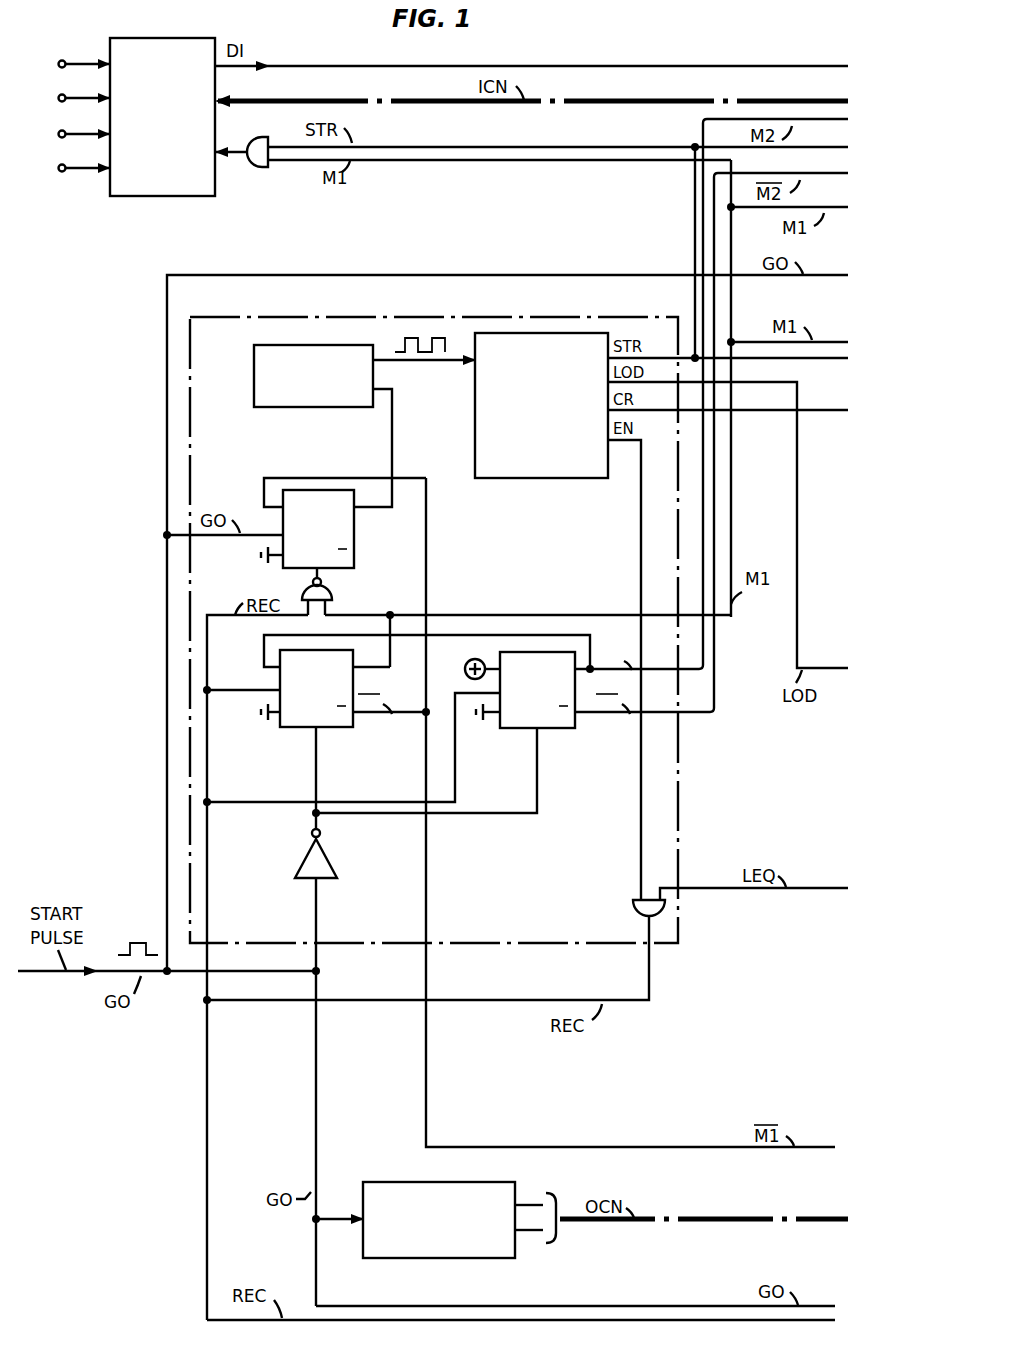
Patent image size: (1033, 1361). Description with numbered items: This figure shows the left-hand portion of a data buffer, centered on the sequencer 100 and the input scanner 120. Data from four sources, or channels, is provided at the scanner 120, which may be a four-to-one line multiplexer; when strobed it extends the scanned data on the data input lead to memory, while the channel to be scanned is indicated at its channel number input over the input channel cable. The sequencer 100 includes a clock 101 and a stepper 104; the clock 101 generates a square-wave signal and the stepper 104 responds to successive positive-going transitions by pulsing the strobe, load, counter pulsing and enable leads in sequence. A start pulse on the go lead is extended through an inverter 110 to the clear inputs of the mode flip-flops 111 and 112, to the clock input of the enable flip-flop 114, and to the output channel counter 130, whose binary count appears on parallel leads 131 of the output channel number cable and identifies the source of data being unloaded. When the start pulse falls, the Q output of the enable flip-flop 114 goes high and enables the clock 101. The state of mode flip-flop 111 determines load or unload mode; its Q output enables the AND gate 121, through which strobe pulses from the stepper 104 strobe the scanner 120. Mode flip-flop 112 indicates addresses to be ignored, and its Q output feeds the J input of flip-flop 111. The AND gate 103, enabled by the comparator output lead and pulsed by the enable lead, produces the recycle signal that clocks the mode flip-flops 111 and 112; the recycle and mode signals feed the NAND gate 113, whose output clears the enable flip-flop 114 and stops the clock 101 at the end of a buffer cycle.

The sequencer 100 is at (498, 314).
The clock 101 is at (254, 382).
The AND gate 103 is at (630, 910).
The stepper 104 is at (562, 479).
The inverter 110 is at (337, 866).
The mode flip-flop 111 is at (353, 727).
The mode flip-flop 112 is at (575, 728).
The NAND gate 113 is at (334, 594).
The enable flip-flop 114 is at (283, 520).
The scanner 120 is at (166, 197).
The AND gate 121 is at (256, 169).
The output channel counter 130 is at (392, 1182).
The leads 131 is at (537, 1234).